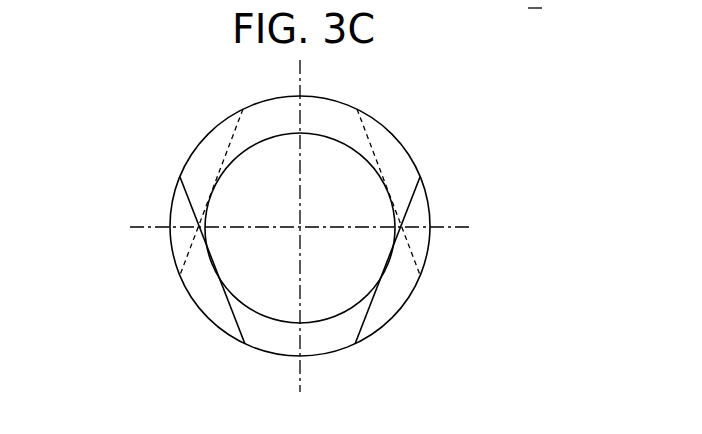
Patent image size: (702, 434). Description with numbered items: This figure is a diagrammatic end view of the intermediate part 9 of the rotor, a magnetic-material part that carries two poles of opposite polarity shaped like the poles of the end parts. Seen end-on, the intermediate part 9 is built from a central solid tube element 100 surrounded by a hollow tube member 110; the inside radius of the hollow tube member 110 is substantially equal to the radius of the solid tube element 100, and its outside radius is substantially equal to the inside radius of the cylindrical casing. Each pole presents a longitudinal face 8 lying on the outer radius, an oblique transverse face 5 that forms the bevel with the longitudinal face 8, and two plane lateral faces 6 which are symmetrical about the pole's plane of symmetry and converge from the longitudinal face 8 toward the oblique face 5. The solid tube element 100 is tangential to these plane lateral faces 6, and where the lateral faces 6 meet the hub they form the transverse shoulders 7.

The intermediate part 9 is at (156, 196).
The longitudinal face 8 is at (340, 102).
The oblique transverse face 5 is at (350, 168).
The hollow tube member 110 is at (260, 117).
The central solid tube element 100 is at (245, 180).
The transverse shoulder 7 is at (198, 283).
The plane lateral face 6 is at (233, 317).